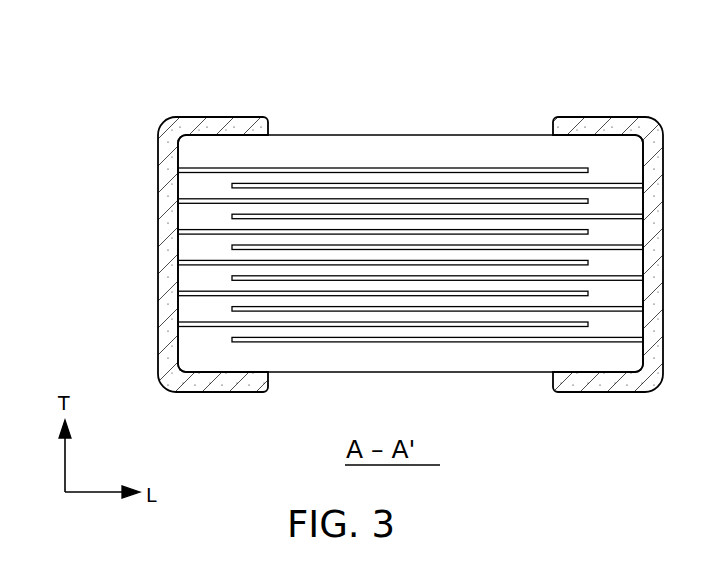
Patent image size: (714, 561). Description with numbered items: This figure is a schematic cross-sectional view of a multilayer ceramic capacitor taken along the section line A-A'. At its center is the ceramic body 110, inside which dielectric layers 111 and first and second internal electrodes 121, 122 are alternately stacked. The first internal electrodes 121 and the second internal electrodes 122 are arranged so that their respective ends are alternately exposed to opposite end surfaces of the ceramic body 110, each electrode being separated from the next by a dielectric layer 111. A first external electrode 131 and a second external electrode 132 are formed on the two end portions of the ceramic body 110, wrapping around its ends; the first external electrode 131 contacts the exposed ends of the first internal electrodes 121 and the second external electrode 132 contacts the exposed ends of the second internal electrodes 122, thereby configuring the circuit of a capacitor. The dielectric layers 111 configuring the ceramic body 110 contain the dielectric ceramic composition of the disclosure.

The ceramic body 110 is at (411, 135).
The dielectric layer 111 is at (187, 185).
The first internal electrode 121 is at (217, 170).
The second internal electrode 122 is at (245, 186).
The first external electrode 131 is at (212, 122).
The second external electrode 132 is at (608, 122).